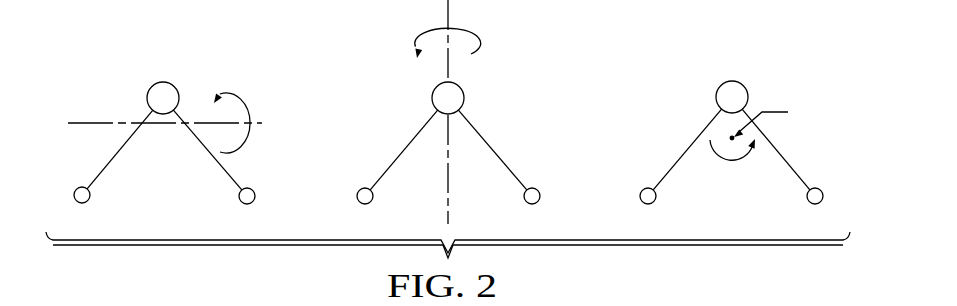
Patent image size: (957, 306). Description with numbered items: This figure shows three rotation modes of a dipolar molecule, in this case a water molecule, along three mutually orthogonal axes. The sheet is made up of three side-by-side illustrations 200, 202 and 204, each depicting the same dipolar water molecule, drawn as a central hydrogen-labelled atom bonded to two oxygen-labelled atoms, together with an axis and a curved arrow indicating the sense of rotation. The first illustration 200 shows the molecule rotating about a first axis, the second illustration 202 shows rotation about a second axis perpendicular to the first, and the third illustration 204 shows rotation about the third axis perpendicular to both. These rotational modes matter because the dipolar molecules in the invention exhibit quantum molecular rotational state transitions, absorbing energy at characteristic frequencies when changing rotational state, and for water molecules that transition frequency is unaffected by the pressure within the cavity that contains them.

The illustration of first rotational mode 200 is at (108, 70).
The illustration of second rotational mode 202 is at (393, 70).
The illustration of third rotational mode 204 is at (678, 71).